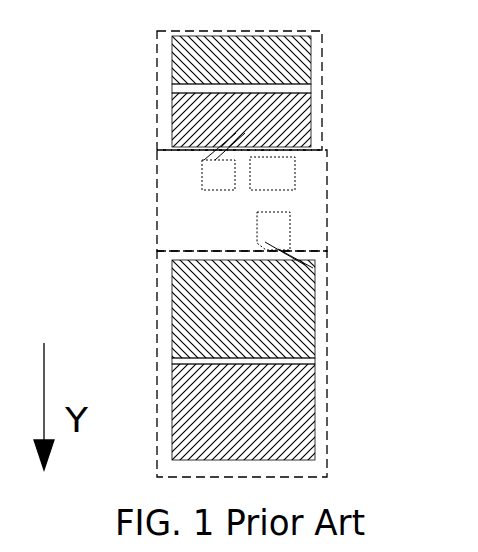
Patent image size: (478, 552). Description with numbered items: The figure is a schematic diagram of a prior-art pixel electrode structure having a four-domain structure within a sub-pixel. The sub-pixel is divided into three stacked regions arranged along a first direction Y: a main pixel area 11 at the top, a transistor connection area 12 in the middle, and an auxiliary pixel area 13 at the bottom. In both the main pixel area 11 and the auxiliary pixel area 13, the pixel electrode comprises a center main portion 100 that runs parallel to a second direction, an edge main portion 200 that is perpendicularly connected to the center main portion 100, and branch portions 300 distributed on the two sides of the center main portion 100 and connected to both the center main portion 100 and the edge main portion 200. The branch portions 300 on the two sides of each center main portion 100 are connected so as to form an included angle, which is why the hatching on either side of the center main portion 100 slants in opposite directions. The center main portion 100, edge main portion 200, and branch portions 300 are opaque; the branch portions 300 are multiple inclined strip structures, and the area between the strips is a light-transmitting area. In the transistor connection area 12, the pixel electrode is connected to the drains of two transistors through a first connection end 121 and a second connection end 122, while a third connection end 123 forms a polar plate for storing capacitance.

The main pixel area 11 is at (160, 124).
The transistor connection area 12 is at (160, 208).
The auxiliary pixel area 13 is at (158, 348).
The center main portion 100 is at (300, 88).
The edge main portion 200 is at (318, 49).
The branch portions 300 is at (298, 127).
The first connection end 121 is at (220, 176).
The second connection end 122 is at (278, 230).
The third connection end 123 is at (278, 173).